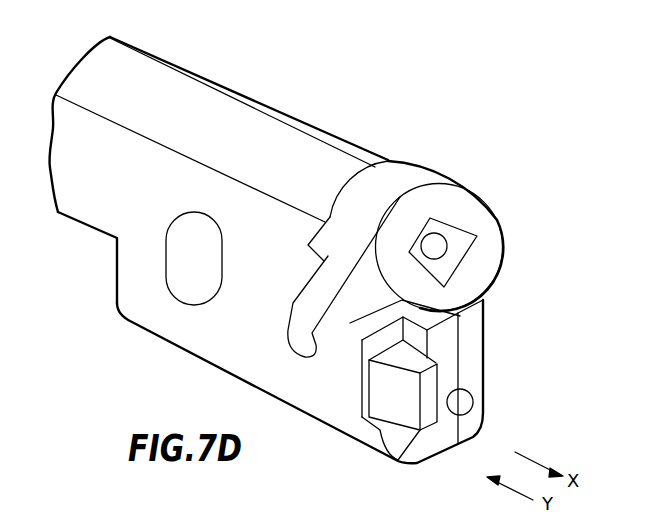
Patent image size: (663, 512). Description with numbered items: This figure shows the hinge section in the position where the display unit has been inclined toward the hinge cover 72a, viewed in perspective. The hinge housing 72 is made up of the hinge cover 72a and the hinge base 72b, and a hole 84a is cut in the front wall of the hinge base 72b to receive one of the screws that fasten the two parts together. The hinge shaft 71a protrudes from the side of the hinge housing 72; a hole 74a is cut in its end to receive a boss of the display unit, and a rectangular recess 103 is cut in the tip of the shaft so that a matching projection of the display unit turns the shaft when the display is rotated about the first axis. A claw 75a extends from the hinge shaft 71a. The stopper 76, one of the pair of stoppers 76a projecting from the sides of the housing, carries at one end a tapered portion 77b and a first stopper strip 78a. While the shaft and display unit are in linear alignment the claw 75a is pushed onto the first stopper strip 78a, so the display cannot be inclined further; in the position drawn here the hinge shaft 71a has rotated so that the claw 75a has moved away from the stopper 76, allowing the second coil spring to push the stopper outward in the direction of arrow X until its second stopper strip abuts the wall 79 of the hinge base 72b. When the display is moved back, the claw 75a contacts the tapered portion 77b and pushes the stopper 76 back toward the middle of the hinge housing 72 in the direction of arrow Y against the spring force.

The hinge housing 72 is at (232, 80).
The hinge cover 72a is at (297, 117).
The hinge base 72b is at (116, 241).
The hole 84a is at (173, 276).
The hinge shaft 71a is at (413, 174).
The rectangular recess 103 is at (457, 222).
The hole 74a is at (437, 247).
The stopper 76 is at (477, 270).
The stopper 76a is at (427, 360).
The tapered portion 77b is at (383, 385).
The first stopper strip 78a is at (415, 422).
The hole 79 is at (470, 402).
The claw 75a is at (302, 318).